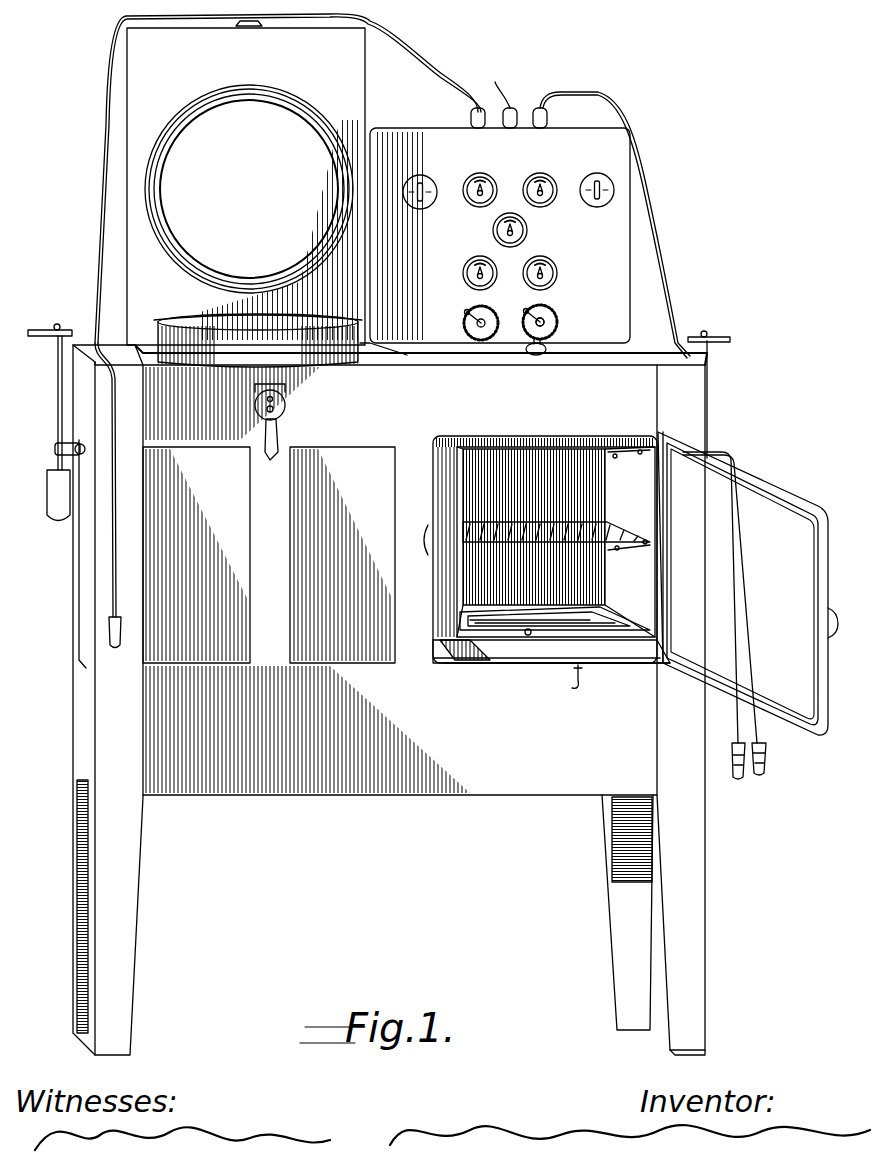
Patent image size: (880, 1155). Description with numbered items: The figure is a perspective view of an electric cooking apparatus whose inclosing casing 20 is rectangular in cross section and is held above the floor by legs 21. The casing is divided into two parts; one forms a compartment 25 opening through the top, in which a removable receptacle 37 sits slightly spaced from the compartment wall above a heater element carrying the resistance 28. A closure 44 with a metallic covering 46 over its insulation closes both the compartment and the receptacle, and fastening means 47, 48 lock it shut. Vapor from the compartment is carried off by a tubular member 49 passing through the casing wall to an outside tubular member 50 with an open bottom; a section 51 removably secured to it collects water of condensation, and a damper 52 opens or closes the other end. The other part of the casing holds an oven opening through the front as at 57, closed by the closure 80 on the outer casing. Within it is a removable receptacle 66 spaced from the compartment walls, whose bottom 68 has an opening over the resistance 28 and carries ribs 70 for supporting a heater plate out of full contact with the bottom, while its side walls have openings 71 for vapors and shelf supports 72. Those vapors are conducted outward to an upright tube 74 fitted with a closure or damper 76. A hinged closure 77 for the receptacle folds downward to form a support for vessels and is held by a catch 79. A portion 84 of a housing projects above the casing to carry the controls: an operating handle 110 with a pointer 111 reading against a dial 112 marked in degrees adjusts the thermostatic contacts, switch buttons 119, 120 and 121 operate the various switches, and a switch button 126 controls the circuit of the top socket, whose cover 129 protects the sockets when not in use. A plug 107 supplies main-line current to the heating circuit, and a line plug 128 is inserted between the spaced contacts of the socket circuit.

The inclosing casing 20 is at (282, 763).
The legs 21 is at (88, 872).
The compartment 25 is at (155, 355).
The resistance 28 is at (527, 636).
The removable receptacle 37 is at (215, 315).
The closure 44 is at (148, 52).
The metallic covering 46 is at (280, 128).
The fastening means 47 is at (262, 412).
The fastening means 48 is at (243, 27).
The tubular member 49 is at (55, 452).
The tubular member 50 is at (58, 390).
The section 51 is at (52, 497).
The damper or closure 52 is at (40, 337).
The oven opening 57 is at (452, 665).
The removable receptacle 66 is at (440, 498).
The bottom 68 is at (470, 603).
The ribs 70 is at (628, 608).
The openings 71 is at (638, 462).
The shelf supports 72 is at (612, 533).
The upright tube 74 is at (710, 347).
The closure or damper 76 is at (730, 338).
The closure 77 is at (628, 650).
The catch 79 is at (578, 690).
The closure 80 is at (782, 520).
The portion of housing 84 is at (620, 224).
The plug 107 is at (542, 116).
The operating handle 110 is at (553, 322).
The pointer 111 is at (537, 326).
The dial or indicator 112 is at (555, 312).
The switch buttons 119 is at (468, 280).
The switch buttons 120 is at (479, 174).
The switch buttons 121 is at (418, 176).
The switch button 126 is at (522, 233).
The line plug 128 is at (504, 81).
The cover 129 is at (543, 356).